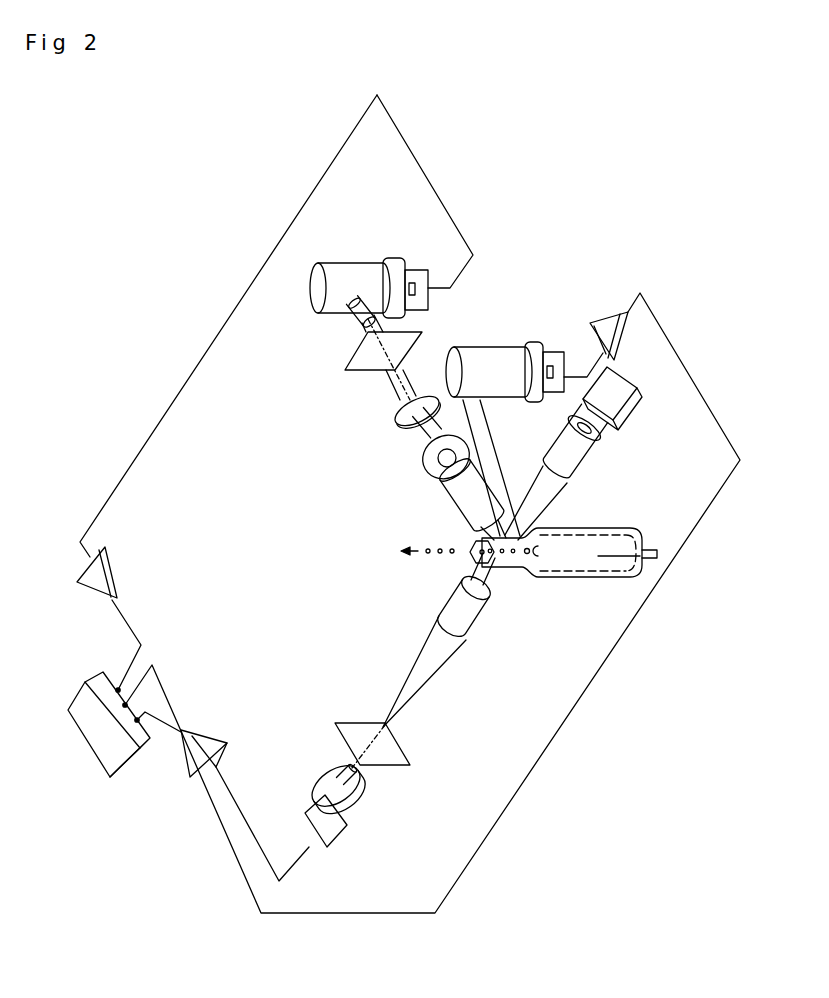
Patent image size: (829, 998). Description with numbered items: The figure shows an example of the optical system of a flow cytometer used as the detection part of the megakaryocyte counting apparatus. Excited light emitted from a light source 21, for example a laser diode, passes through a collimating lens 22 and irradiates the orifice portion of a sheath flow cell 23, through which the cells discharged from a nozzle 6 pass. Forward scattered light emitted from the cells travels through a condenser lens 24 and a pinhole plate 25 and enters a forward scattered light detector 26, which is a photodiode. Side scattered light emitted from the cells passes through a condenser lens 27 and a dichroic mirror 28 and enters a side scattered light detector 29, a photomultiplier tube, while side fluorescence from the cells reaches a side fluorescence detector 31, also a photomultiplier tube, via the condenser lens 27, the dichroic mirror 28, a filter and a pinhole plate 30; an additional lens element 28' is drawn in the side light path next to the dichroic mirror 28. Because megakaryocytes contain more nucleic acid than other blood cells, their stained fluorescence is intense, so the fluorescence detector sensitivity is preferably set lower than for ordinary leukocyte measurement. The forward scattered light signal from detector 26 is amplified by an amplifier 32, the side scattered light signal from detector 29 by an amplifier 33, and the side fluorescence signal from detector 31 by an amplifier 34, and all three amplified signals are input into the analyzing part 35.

The nozzle 6 is at (650, 542).
The light source 21 is at (632, 405).
The collimating lens 22 is at (565, 448).
The sheath flow cell 23 is at (546, 598).
The condenser lens 24 is at (456, 604).
The pinhole plate 25 is at (358, 728).
The forward scattered light detector 26 is at (326, 782).
The condenser lens 27 is at (462, 500).
The dichroic mirror 28 is at (418, 457).
The lens 28' is at (390, 414).
The side scattered light detector 29 is at (497, 356).
The pinhole plate 30 is at (356, 362).
The side fluorescence detector 31 is at (356, 270).
The amplifier 32 is at (198, 733).
The amplifier 33 is at (600, 320).
The amplifier 34 is at (98, 590).
The analyzing part 35 is at (100, 746).